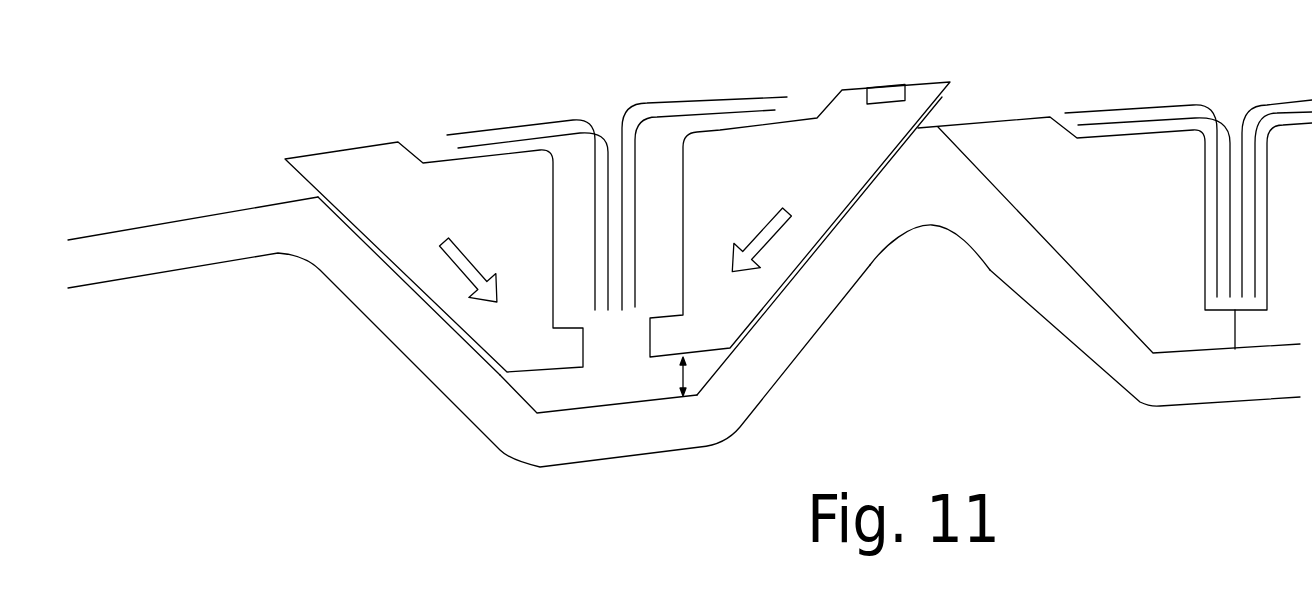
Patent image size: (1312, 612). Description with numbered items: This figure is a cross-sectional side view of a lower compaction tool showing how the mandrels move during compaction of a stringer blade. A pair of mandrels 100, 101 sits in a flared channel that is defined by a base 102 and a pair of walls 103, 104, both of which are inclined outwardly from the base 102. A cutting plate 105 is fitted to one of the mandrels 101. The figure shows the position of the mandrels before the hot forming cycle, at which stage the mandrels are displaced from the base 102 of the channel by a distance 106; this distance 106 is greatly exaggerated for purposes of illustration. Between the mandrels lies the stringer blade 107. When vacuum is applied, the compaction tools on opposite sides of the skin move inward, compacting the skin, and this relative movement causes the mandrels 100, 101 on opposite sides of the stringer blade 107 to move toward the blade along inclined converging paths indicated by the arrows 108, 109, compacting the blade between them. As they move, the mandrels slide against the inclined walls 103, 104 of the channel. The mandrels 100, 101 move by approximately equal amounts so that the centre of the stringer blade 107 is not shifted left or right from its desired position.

The mandrel 100 is at (357, 147).
The mandrel 101 is at (942, 97).
The base 102 is at (610, 405).
The wall 103 is at (410, 287).
The wall 104 is at (843, 223).
The cutting plate 105 is at (885, 88).
The distance 106 is at (685, 377).
The stringer blade 107 is at (635, 205).
The arrow 108 is at (470, 272).
The arrow 109 is at (759, 242).